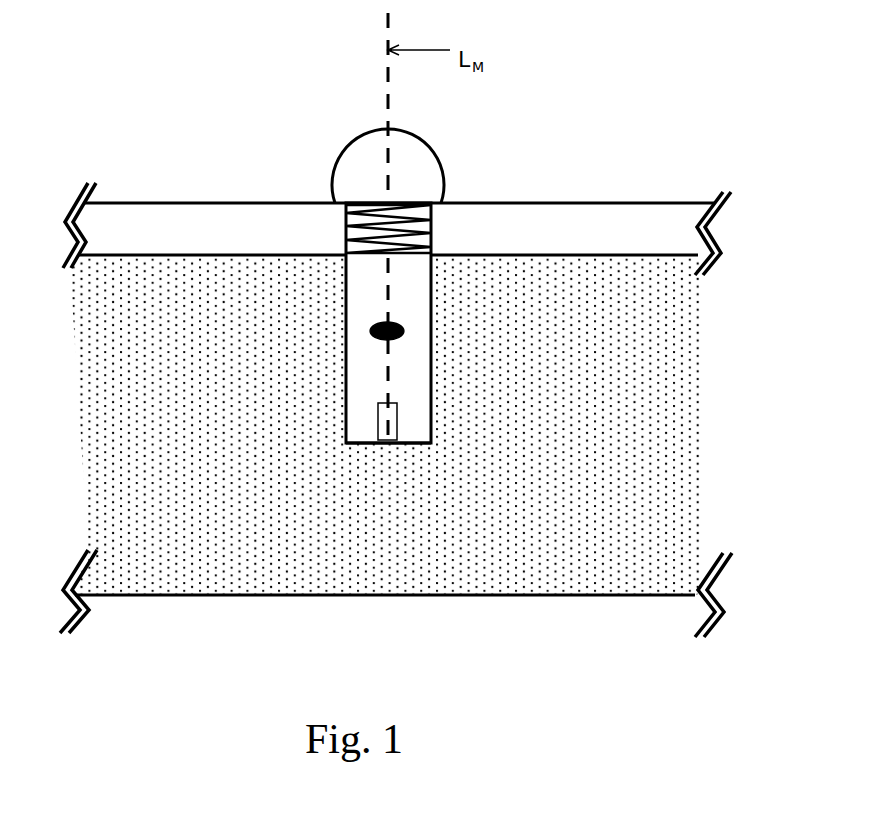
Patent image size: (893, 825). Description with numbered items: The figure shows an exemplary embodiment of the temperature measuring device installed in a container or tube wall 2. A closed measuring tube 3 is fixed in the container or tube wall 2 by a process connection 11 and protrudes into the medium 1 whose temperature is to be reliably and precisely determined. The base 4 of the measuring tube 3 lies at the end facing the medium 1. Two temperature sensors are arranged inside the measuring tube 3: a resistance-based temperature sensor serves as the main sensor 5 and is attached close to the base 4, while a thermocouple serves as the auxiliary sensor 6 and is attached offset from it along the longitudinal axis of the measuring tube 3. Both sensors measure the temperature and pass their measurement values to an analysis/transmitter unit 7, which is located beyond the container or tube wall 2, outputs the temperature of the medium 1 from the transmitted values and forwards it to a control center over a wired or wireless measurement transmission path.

The medium 1 is at (188, 571).
The container or tube wall 2 is at (619, 189).
The measuring tube 3 is at (334, 292).
The base 4 is at (415, 463).
The main sensor 5 is at (364, 428).
The auxiliary sensor 6 is at (414, 345).
The analysis/transmitter unit 7 is at (324, 175).
The process connection 11 is at (441, 209).